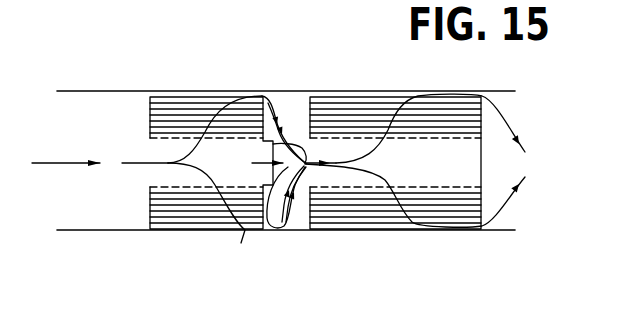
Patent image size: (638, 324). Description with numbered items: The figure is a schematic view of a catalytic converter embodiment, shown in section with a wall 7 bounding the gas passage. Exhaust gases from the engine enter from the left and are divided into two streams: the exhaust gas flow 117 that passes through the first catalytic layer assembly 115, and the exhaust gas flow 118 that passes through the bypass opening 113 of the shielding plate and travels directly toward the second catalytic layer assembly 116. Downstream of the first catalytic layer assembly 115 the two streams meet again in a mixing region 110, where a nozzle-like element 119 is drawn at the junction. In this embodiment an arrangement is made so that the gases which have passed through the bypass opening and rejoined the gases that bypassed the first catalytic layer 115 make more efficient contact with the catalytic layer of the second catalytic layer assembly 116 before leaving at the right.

The wall 7 is at (97, 91).
The outlet 110 is at (326, 151).
The bypass opening 113 is at (212, 220).
The first catalytic layer assembly 115 is at (182, 117).
The second catalytic layer assembly 116 is at (366, 113).
The exhaust gas flow through the first catalytic layer 117 is at (271, 97).
The exhaust gas flow through the bypass opening 118 is at (249, 158).
The nozzle 119 is at (305, 167).